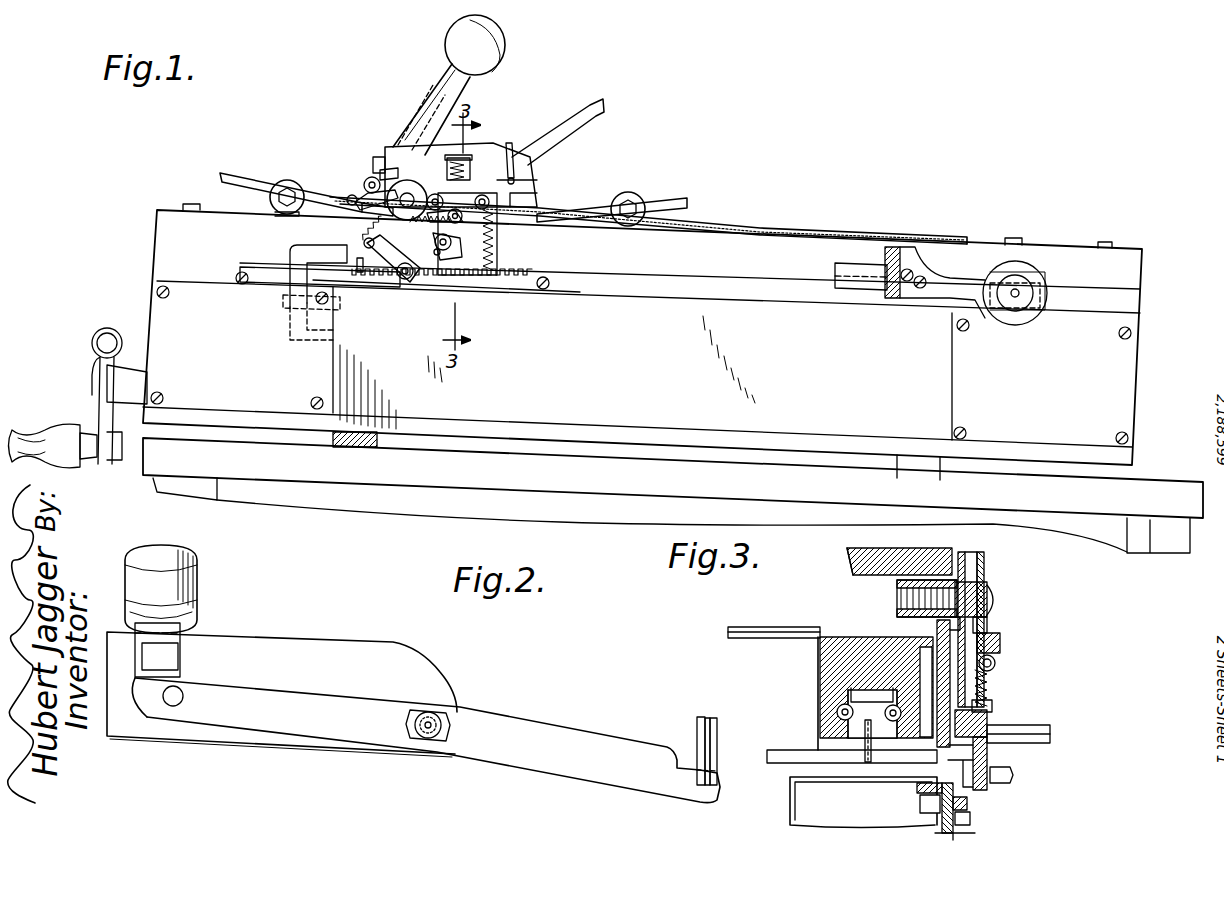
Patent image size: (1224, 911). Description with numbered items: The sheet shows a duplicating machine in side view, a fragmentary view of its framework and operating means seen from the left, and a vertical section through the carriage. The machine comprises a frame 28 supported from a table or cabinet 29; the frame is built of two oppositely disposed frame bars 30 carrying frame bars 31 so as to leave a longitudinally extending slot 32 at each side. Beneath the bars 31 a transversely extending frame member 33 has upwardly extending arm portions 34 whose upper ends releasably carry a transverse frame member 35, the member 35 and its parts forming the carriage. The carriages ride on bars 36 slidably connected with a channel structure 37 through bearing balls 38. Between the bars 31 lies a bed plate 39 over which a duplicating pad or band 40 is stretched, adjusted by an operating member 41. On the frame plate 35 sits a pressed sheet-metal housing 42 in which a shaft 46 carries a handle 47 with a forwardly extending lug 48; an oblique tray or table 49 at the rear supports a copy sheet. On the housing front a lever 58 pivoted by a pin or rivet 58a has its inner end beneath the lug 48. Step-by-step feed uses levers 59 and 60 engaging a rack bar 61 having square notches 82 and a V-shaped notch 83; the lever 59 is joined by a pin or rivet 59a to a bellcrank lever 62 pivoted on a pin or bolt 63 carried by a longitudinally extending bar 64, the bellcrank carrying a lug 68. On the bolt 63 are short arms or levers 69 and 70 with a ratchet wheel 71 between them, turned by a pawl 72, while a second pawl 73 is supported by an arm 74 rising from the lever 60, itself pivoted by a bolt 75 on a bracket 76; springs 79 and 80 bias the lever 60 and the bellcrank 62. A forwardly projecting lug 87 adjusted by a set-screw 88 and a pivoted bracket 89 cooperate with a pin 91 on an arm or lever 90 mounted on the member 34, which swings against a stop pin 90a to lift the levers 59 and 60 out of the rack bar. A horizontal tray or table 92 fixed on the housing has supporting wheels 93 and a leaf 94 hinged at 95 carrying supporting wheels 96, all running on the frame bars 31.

In FIG. 1, the frame 28 is at (1137, 390).
In FIG. 3, the frame 28 is at (960, 833).
In FIG. 1, the table or cabinet 29 is at (1155, 484).
In FIG. 1, the frame bars 30 is at (662, 310).
In FIG. 3, the frame bars 30 is at (790, 801).
In FIG. 1, the frame bars 31 is at (752, 236).
In FIG. 3, the frame bars 31 is at (817, 686).
In FIG. 1, the longitudinally extending slot 32 is at (812, 291).
In FIG. 3, the transversely extending frame member 33 is at (776, 750).
In FIG. 1, the arm portions 34 is at (497, 242).
In FIG. 3, the arm portions 34 is at (900, 601).
In FIG. 3, the transverse frame member 35 is at (880, 574).
In FIG. 3, the bars 36 is at (860, 768).
In FIG. 3, the channel structure 37 is at (829, 632).
In FIG. 3, the bearing balls 38 is at (838, 712).
In FIG. 3, the bed plate 39 is at (786, 639).
In FIG. 1, the duplicating pad or band 40 is at (840, 232).
In FIG. 1, the operating member 41 is at (98, 402).
In FIG. 1, the housing 42 is at (538, 170).
In FIG. 2, the housing 42 is at (253, 646).
In FIG. 1, the shaft 46 is at (418, 110).
In FIG. 1, the handle 47 is at (446, 77).
In FIG. 2, the handle 47 is at (190, 592).
In FIG. 1, the lug 48 is at (385, 150).
In FIG. 2, the lug 48 is at (178, 654).
In FIG. 1, the tray or table 49 is at (560, 118).
In FIG. 2, the lever 58 is at (508, 729).
In FIG. 2, the pin or rivet 58a is at (427, 712).
In FIG. 1, the lever 59 is at (370, 238).
In FIG. 3, the lever 59 is at (940, 790).
In FIG. 3, the pin or rivet 59a is at (916, 785).
In FIG. 3, the lever 60 is at (968, 805).
In FIG. 1, the rack bar 61 is at (362, 296).
In FIG. 3, the rack bar 61 is at (971, 820).
In FIG. 3, the bellcrank lever 62 is at (936, 628).
In FIG. 3, the pin or bolt 63 is at (992, 592).
In FIG. 1, the longitudinally extending bar 64 is at (516, 190).
In FIG. 3, the longitudinally extending bar 64 is at (910, 567).
In FIG. 1, the lug 68 is at (385, 168).
In FIG. 2, the arm or lever 69 is at (700, 740).
In FIG. 3, the arm or lever 69 is at (968, 560).
In FIG. 1, the arm or lever 70 is at (368, 180).
In FIG. 2, the arm or lever 70 is at (713, 722).
In FIG. 3, the arm or lever 70 is at (986, 560).
In FIG. 3, the ratchet wheel 71 is at (988, 621).
In FIG. 2, the pawl 72 is at (698, 722).
In FIG. 3, the second pawl 73 is at (996, 664).
In FIG. 3, the arm 74 is at (993, 706).
In FIG. 3, the bolt 75 is at (1014, 776).
In FIG. 1, the bracket 76 is at (386, 282).
In FIG. 3, the bracket 76 is at (990, 752).
In FIG. 3, the spring 79 is at (989, 687).
In FIG. 3, the spring 80 is at (1001, 643).
In FIG. 1, the square notches 82 is at (522, 273).
In FIG. 1, the V-shaped notch 83 is at (346, 265).
In FIG. 1, the lug 87 is at (868, 291).
In FIG. 1, the set-screw 88 is at (1048, 281).
In FIG. 1, the bracket 89 is at (275, 331).
In FIG. 1, the arm or lever 90 is at (461, 256).
In FIG. 3, the arm or lever 90 is at (988, 722).
In FIG. 1, the stop pin 90a is at (436, 262).
In FIG. 1, the pin 91 is at (441, 255).
In FIG. 3, the pin 91 is at (1050, 741).
In FIG. 1, the tray or table 92 is at (672, 199).
In FIG. 1, the supporting wheels 93 is at (627, 192).
In FIG. 1, the leaf 94 is at (246, 177).
In FIG. 1, the hinges 95 is at (351, 196).
In FIG. 1, the supporting wheels 96 is at (287, 180).